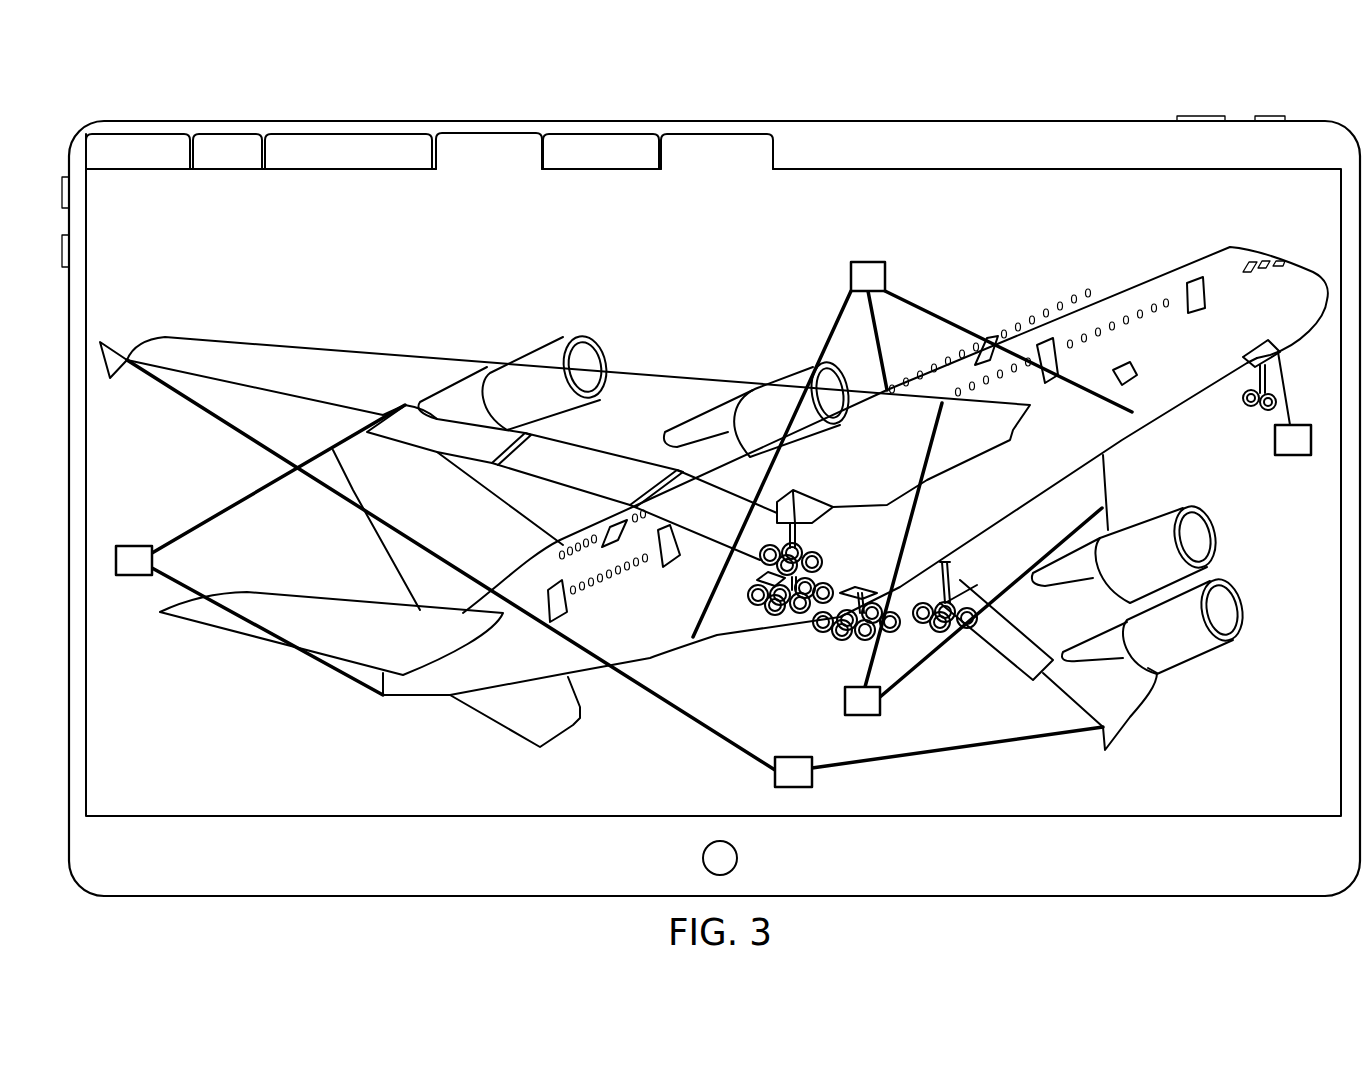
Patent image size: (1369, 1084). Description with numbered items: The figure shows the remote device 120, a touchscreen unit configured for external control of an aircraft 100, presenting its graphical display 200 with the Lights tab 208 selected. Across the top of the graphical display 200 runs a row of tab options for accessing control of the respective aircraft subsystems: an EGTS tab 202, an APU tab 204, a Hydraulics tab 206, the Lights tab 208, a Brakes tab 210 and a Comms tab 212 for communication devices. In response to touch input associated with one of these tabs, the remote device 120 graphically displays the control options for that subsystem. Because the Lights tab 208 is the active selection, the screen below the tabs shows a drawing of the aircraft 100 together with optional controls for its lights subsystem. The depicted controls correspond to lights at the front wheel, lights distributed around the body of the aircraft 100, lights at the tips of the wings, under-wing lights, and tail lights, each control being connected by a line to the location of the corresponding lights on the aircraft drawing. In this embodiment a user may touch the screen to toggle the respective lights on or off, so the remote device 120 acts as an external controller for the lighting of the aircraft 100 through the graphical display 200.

The aircraft 100 is at (1156, 268).
The remote device 120 is at (910, 128).
The graphical display 200 is at (990, 228).
The EGTS tab 202 is at (136, 171).
The APU tab 204 is at (226, 171).
The Hydraulics tab 206 is at (348, 171).
The Lights tab 208 is at (494, 171).
The Brakes tab 210 is at (597, 171).
The Comms tab 212 is at (714, 171).